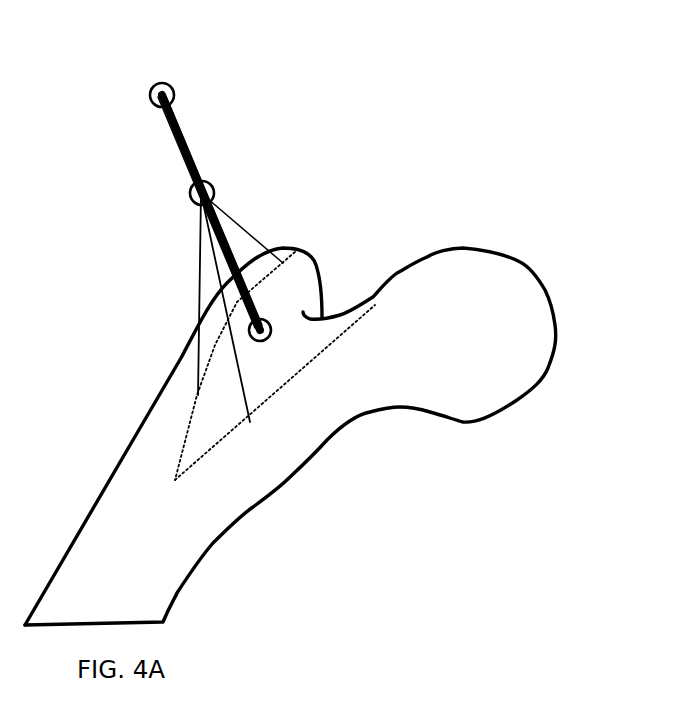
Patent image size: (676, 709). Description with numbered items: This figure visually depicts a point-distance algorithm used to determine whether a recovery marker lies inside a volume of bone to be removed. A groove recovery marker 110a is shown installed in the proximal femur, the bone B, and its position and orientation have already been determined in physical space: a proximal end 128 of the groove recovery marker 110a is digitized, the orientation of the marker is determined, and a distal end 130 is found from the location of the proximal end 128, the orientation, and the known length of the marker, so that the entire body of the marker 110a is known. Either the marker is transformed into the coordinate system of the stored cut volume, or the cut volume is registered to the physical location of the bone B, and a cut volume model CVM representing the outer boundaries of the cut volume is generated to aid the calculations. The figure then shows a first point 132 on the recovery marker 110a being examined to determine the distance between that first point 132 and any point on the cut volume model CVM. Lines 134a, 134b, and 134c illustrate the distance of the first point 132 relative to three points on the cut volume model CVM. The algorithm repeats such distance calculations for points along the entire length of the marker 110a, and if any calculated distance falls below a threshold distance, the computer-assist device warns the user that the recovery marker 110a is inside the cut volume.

The bone B is at (557, 300).
The cut volume model CVM is at (173, 477).
The groove recovery marker 110a is at (190, 122).
The proximal end 128 is at (167, 83).
The distal end 130 is at (270, 326).
The first point 132 is at (190, 193).
The line 134a is at (196, 293).
The line 134b is at (237, 217).
The line 134c is at (241, 375).